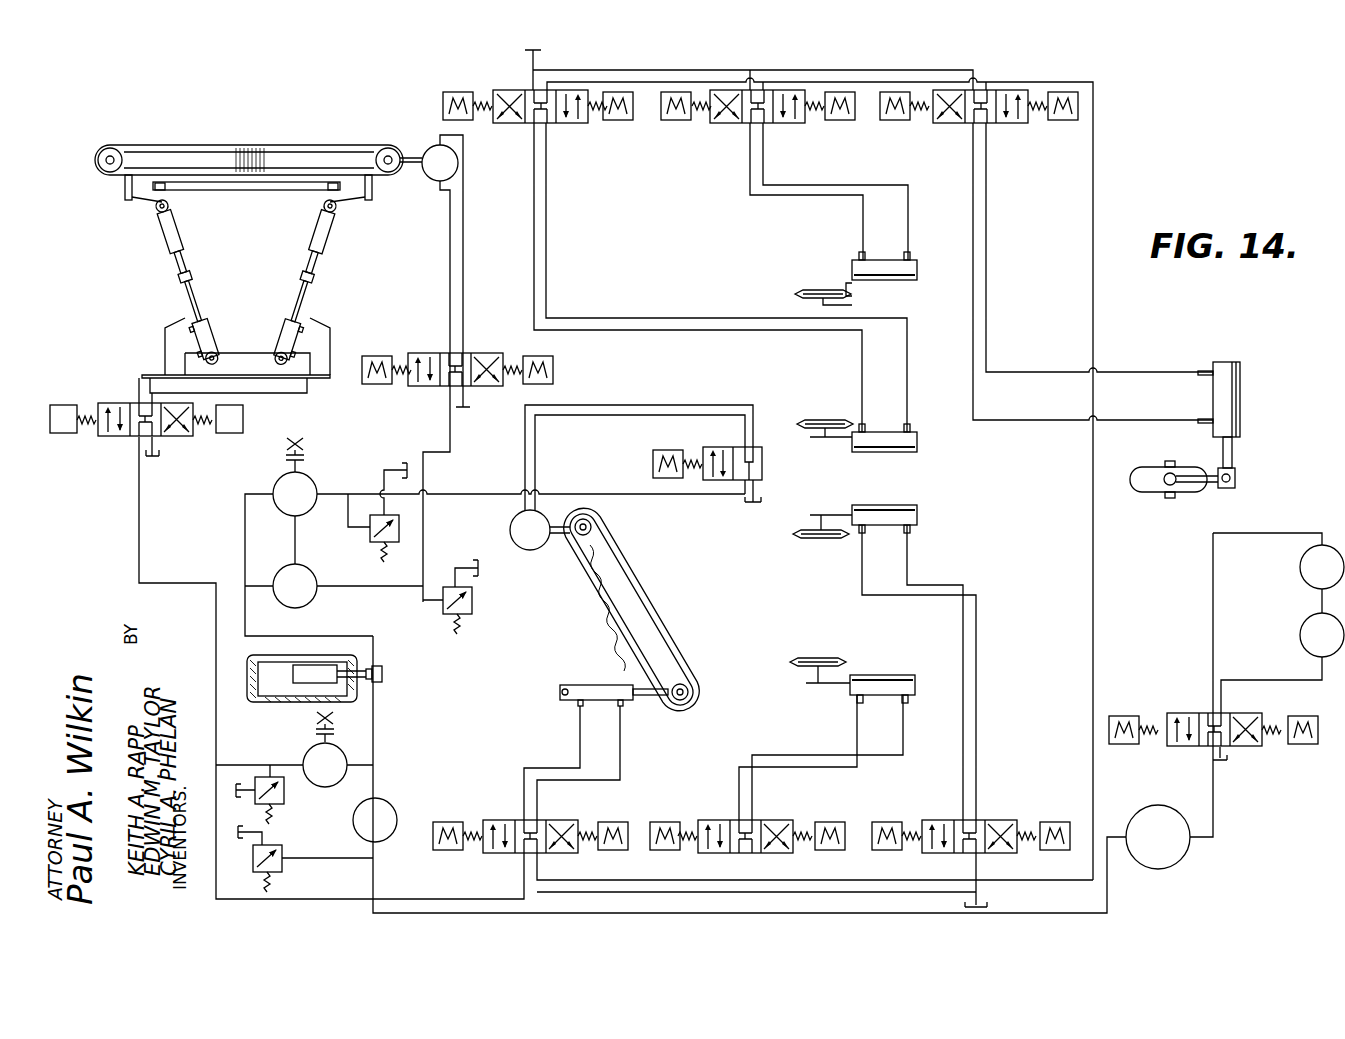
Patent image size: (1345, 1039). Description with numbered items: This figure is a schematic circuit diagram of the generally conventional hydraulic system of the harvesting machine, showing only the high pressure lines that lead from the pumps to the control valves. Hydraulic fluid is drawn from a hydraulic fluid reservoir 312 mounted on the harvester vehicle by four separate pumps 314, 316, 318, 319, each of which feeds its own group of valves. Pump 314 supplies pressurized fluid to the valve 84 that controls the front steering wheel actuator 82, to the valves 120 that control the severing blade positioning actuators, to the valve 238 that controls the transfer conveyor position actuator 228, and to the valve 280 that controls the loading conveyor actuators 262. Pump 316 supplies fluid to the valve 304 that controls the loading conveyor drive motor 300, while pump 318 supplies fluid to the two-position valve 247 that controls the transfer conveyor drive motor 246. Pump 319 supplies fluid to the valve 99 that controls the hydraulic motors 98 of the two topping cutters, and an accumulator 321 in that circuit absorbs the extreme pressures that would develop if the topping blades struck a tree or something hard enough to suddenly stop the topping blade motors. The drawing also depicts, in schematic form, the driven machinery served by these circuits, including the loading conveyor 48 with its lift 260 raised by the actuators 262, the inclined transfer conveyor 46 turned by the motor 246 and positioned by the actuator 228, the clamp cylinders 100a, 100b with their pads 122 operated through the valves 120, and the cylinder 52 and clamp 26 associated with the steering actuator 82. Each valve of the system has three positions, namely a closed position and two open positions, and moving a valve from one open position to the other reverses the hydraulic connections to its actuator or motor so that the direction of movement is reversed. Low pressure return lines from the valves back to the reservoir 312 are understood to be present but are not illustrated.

The conveyor 48 is at (322, 132).
The loading conveyor drive motor 300 is at (430, 148).
The lift 260 is at (172, 290).
The loading conveyor actuators 262 is at (292, 318).
The valve 304 is at (438, 352).
The valve 280 is at (120, 440).
The pump 318 is at (312, 478).
The pump 316 is at (313, 596).
The hydraulic fluid reservoir 312 is at (246, 700).
The pump 314 is at (304, 750).
The pump 319 is at (388, 803).
The transfer conveyor drive motor 246 is at (545, 550).
The transfer conveyor position actuator 228 is at (586, 684).
The inclined conveyor 46 is at (648, 566).
The valve 238 is at (580, 812).
The valves 120 is at (512, 128).
The clamp pads 122 is at (795, 296).
The clamp cylinder 100a is at (918, 452).
The clamp cylinder 100b is at (890, 282).
The valve 84 is at (1003, 126).
The two-position valve 247 is at (770, 466).
The cylinder 52 is at (1245, 382).
The front steering wheel actuator 82 is at (1242, 425).
The clamp 26 is at (1162, 487).
The hydraulic motors 98 is at (1300, 581).
The valve 99 is at (1195, 708).
The accumulator 321 is at (1172, 866).